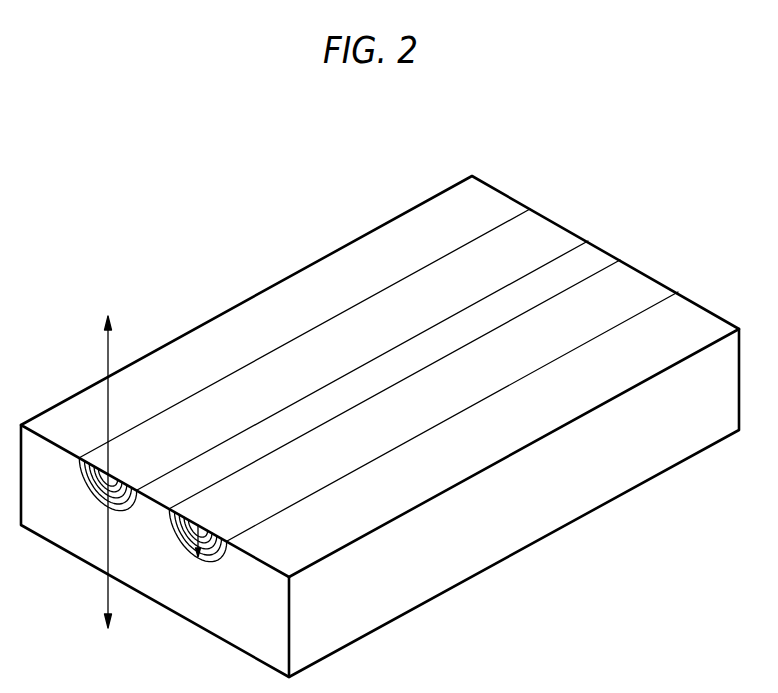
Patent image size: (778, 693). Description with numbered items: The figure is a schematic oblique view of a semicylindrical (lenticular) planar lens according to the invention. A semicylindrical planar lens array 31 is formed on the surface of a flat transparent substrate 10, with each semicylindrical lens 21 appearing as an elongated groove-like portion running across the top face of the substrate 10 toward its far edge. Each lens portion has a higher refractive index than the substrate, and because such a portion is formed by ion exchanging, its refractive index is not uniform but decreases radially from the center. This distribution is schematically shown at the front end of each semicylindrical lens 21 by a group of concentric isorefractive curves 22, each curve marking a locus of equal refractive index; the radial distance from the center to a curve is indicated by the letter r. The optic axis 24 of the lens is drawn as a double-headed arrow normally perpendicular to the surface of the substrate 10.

The substrate 10 is at (458, 570).
The semicylindrical lens 21 is at (316, 355).
The isorefractive curve 22 is at (83, 494).
The optic axis 24 is at (107, 358).
The semicylindrical planar lens array 31 is at (652, 195).